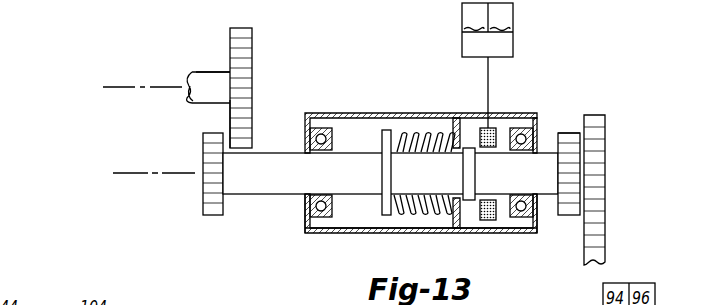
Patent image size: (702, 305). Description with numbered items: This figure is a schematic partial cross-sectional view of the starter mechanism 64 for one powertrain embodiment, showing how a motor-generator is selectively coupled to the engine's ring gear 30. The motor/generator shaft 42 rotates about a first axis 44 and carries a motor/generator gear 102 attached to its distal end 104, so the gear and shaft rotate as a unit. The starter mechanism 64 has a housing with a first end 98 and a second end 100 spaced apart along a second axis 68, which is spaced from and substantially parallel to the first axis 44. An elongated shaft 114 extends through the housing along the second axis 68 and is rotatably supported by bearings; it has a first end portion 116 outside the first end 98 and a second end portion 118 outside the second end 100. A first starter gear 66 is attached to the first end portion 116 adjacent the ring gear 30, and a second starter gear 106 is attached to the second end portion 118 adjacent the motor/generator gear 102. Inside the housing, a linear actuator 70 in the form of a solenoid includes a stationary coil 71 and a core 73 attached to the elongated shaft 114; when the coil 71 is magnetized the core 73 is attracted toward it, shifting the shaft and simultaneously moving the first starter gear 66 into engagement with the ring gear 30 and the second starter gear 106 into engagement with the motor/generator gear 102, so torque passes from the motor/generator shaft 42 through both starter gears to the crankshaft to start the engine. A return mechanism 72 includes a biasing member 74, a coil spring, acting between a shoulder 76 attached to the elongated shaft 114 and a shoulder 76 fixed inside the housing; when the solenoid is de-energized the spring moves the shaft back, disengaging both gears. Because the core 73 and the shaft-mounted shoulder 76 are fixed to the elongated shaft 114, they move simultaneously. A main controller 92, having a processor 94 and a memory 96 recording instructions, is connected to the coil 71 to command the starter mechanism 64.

The ring gear 30 is at (606, 150).
The motor/generator shaft 42 is at (200, 96).
The first axis 44 is at (122, 87).
The starter mechanism 64 is at (349, 113).
The first starter gear 66 is at (571, 129).
The second axis 68 is at (132, 176).
The linear actuator 70 is at (500, 218).
The coil 71 is at (489, 222).
The return mechanism 72 is at (400, 232).
The core 73 is at (475, 173).
The biasing member 74 is at (426, 134).
The shoulder 76 is at (386, 128).
The main controller 92 is at (509, 65).
The processor 94 is at (474, 20).
The memory 96 is at (513, 45).
The first end 98 is at (537, 230).
The second end 100 is at (304, 224).
The motor/generator gear 102 is at (252, 50).
The distal end 104 is at (226, 72).
The second starter gear 106 is at (202, 140).
The elongated shaft 114 is at (236, 186).
The first end portion 116 is at (550, 132).
The second end portion 118 is at (230, 146).